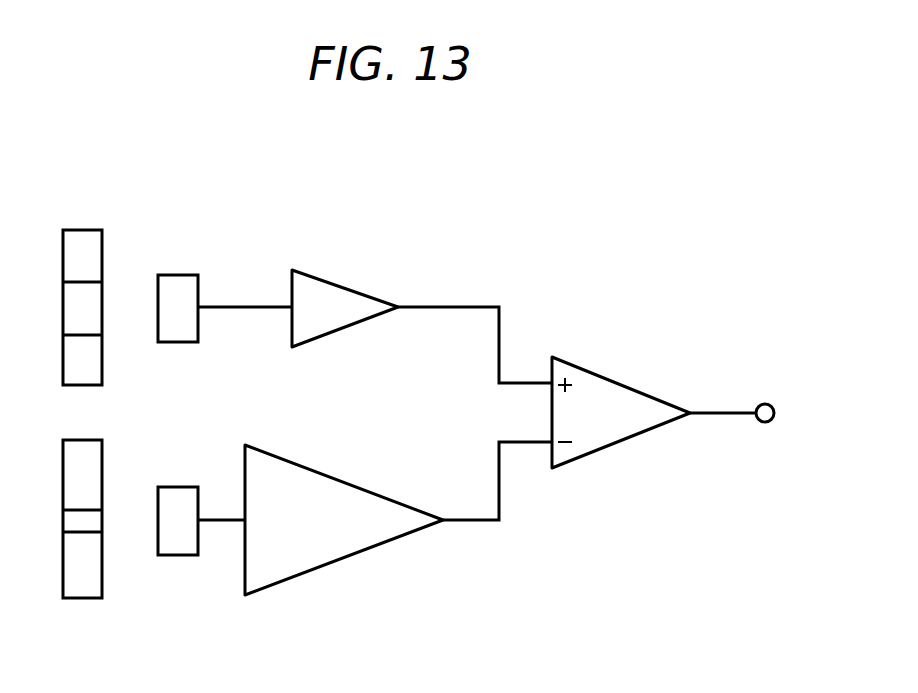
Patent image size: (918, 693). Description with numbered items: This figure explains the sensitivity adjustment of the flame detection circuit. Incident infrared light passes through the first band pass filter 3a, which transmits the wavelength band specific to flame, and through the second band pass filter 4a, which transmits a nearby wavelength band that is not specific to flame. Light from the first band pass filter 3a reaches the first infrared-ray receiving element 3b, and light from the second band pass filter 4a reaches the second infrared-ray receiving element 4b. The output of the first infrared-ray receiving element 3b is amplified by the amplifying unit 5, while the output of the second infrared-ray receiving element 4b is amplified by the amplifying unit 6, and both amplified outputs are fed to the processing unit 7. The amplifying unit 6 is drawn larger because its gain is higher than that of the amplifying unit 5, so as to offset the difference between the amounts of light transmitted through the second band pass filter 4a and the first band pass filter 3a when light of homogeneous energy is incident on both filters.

The first band pass filter 3a is at (86, 230).
The first infrared-ray receiving element 3b is at (180, 275).
The second band pass filter 4a is at (80, 598).
The second infrared-ray receiving element 4b is at (178, 555).
The amplifying unit 5 is at (343, 283).
The amplifying unit 6 is at (395, 540).
The processing unit 7 is at (600, 372).